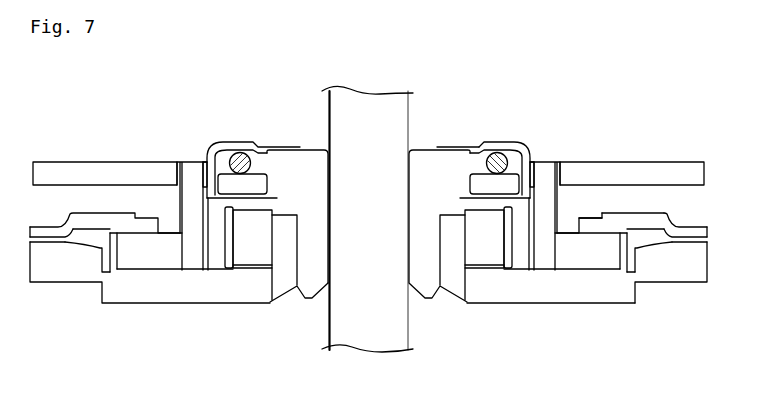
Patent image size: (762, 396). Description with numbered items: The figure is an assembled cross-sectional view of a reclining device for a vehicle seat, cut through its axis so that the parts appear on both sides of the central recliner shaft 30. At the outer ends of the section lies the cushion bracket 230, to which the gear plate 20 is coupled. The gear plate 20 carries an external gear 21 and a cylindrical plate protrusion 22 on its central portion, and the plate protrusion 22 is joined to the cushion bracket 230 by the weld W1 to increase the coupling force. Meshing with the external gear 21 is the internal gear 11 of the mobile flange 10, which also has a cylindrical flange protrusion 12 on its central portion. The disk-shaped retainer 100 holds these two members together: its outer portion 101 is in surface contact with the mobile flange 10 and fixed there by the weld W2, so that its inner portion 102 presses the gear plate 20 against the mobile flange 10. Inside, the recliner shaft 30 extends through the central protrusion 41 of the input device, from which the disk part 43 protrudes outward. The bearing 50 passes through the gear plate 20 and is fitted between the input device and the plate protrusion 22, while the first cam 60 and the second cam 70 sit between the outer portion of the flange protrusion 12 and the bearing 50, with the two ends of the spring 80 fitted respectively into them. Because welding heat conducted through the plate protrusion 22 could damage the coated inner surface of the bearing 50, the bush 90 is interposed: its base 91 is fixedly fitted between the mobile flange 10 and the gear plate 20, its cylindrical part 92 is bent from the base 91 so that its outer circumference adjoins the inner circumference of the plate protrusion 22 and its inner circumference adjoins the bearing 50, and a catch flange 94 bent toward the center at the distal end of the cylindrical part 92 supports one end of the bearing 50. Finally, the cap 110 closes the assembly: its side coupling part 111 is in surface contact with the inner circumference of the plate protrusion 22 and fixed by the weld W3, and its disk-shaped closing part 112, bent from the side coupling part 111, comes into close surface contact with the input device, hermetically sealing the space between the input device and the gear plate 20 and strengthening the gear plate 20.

The mobile flange 10 is at (550, 272).
The internal gear 11 is at (101, 265).
The flange protrusion 12 is at (447, 300).
The gear plate 20 is at (580, 268).
The external gear 21 is at (117, 272).
The plate protrusion 22 is at (188, 167).
The recliner shaft 30 is at (372, 96).
The central protrusion 41 is at (307, 300).
The disk part 43 is at (497, 156).
The bearing 50 is at (230, 255).
The first cam 60 is at (485, 257).
The second cam 70 is at (257, 257).
The spring 80 is at (243, 158).
The bush 90 is at (552, 205).
The base 91 is at (198, 262).
The cylindrical part 92 is at (200, 212).
The catch flange 94 is at (228, 196).
The retainer 100 is at (628, 210).
The outer portion 101 is at (705, 224).
The inner portion 102 is at (591, 218).
The cap 110 is at (281, 140).
The side coupling part 111 is at (525, 140).
The closing part 112 is at (462, 142).
The cushion bracket 230 is at (70, 160).
The weld W1 is at (177, 170).
The weld W2 is at (42, 244).
The weld W3 is at (205, 163).